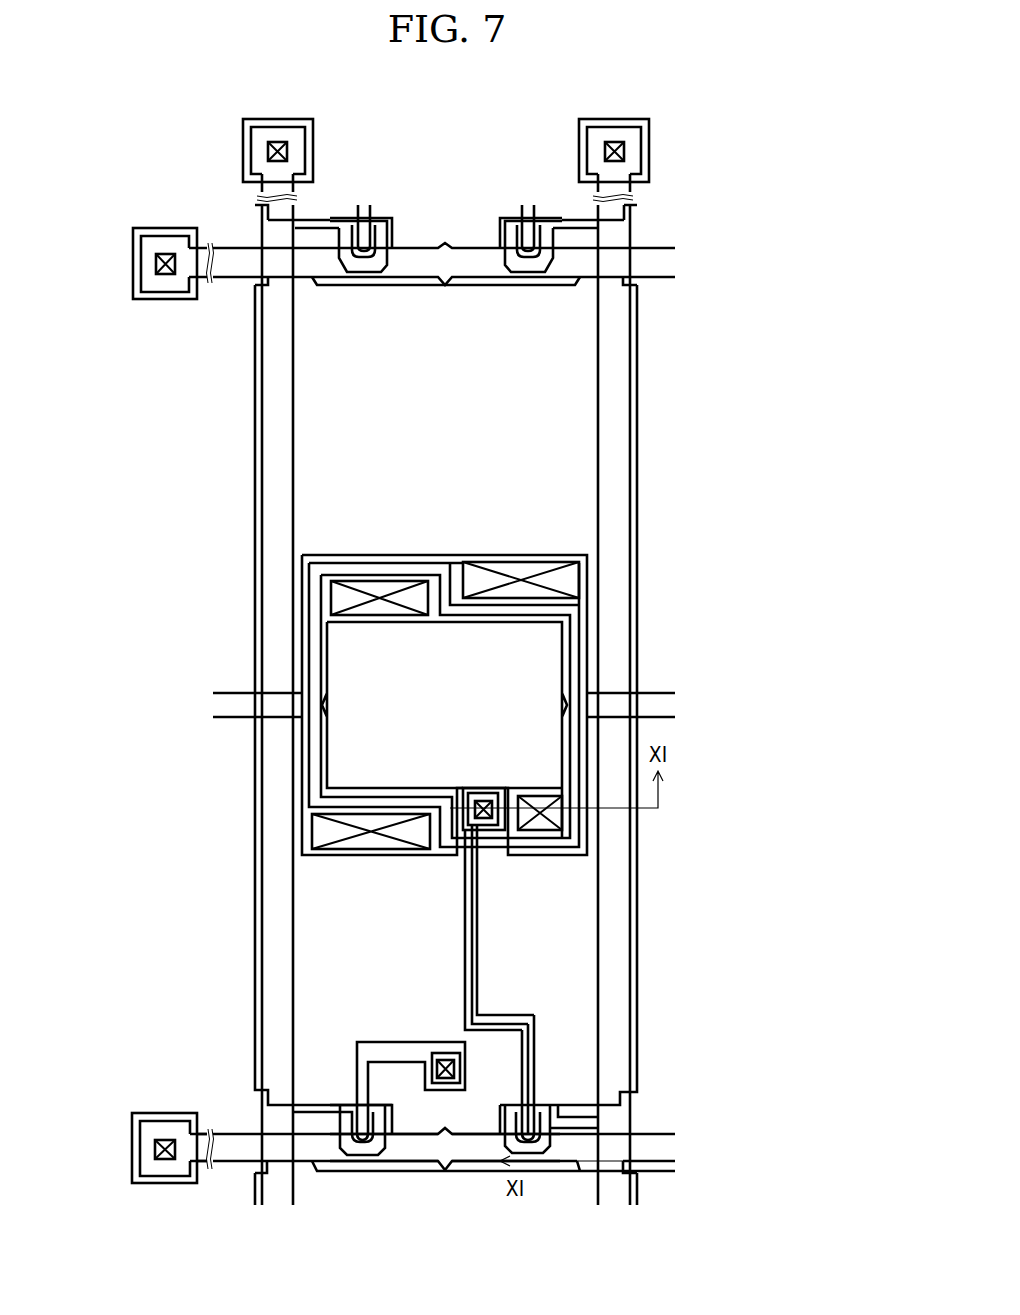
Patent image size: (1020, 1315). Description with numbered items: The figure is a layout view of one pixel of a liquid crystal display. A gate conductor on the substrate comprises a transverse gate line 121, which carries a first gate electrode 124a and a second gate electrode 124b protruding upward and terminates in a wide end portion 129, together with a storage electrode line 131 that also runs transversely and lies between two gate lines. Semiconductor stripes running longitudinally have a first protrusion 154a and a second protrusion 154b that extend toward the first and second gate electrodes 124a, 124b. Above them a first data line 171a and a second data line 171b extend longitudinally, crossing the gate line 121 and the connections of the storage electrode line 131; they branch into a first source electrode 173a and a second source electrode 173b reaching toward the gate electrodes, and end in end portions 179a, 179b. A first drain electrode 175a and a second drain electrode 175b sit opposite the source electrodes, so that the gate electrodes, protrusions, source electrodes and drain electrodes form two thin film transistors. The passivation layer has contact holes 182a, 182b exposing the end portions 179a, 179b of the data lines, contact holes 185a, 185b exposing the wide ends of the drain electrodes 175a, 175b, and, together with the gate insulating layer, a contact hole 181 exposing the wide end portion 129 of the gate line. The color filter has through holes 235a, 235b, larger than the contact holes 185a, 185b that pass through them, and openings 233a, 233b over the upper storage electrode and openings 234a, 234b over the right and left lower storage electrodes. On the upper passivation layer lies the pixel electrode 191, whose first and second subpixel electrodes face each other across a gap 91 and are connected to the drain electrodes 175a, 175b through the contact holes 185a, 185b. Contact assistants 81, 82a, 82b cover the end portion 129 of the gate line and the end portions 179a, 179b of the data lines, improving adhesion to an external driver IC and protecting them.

The contact assistant 81 is at (150, 1113).
The contact assistant 82a is at (625, 119).
The contact assistant 82b is at (288, 119).
The gap 91 is at (298, 752).
The gate line 121 is at (657, 1172).
The first gate electrode 124a is at (515, 1140).
The second gate electrode 124b is at (405, 1135).
The wide end portion 129 is at (166, 1178).
The storage electrode line 131 is at (443, 555).
The first protrusion 154a is at (541, 1106).
The second protrusion 154b is at (353, 1108).
The first data line 171a is at (598, 410).
The second data line 171b is at (292, 410).
The first source electrode 173a is at (560, 1150).
The second source electrode 173b is at (358, 1156).
The first drain electrode 175a is at (540, 1045).
The second drain electrode 175b is at (356, 1062).
The end portion 179a is at (587, 150).
The end portion 179b is at (251, 150).
The contact hole 181 is at (153, 1148).
The contact hole 182a is at (624, 152).
The contact hole 182b is at (287, 152).
The contact hole 185a is at (483, 800).
The contact hole 185b is at (440, 1084).
The pixel electrode 191 is at (255, 540).
The opening 233a is at (331, 597).
The opening 233b is at (548, 556).
The opening 234a is at (566, 822).
The opening 234b is at (313, 832).
The through hole 235a is at (483, 832).
The through hole 235b is at (441, 1053).